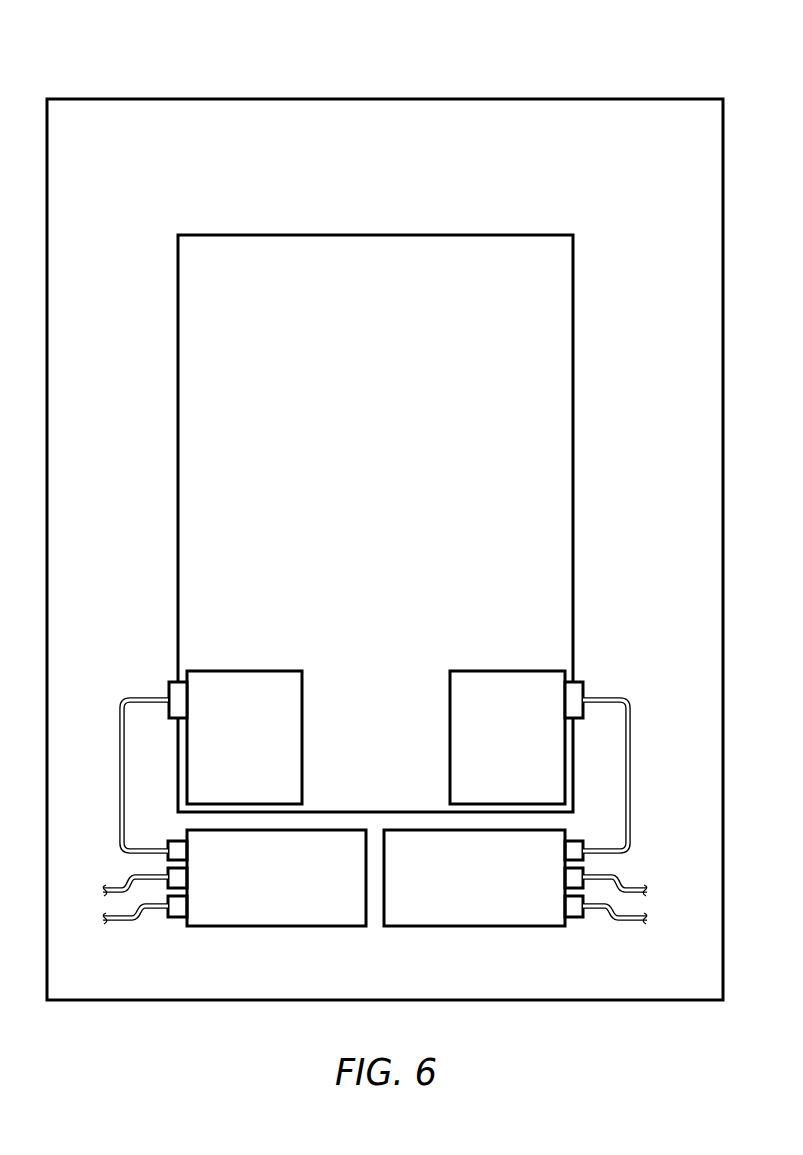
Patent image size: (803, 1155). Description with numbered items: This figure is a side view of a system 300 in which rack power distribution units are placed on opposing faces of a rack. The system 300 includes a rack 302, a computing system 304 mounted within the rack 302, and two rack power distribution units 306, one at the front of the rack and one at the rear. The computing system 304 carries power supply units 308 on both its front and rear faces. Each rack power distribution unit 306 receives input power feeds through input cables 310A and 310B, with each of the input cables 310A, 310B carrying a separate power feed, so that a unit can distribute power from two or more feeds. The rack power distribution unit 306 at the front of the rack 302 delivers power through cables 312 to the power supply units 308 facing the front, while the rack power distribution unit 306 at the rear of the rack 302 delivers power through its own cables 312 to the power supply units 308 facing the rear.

The system 300 is at (618, 68).
The rack 302 is at (686, 124).
The computing system 304 is at (359, 532).
The rack power distribution unit 306 is at (260, 886).
The power supply unit 308 is at (227, 746).
The input cable 310A is at (122, 924).
The input cable 310B is at (106, 889).
The cable 312 is at (141, 694).